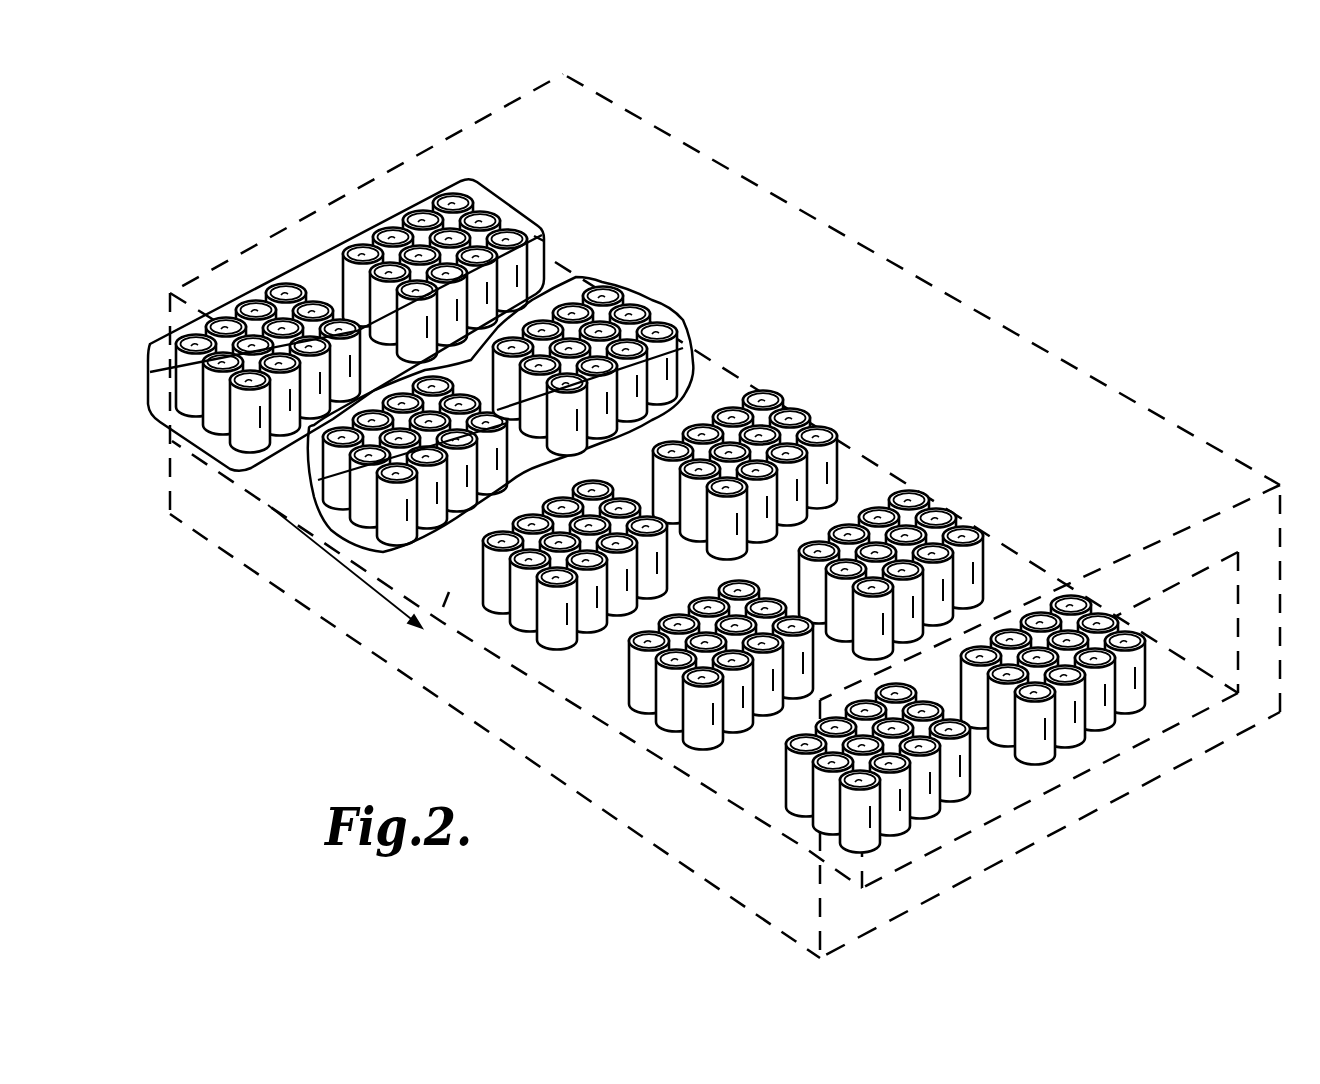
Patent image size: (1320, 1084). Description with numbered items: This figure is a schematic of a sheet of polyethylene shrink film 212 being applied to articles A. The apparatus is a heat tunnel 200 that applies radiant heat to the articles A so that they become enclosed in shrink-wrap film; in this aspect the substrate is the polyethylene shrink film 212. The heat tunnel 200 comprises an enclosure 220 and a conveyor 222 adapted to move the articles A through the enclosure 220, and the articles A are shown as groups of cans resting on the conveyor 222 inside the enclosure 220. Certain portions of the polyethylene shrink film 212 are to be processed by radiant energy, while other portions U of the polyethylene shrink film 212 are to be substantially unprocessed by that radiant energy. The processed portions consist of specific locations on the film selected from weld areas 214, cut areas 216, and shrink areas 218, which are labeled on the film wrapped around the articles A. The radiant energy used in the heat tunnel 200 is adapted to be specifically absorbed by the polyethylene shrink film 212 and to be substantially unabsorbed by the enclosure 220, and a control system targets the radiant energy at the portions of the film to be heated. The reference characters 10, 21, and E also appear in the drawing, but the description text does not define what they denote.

The packaging system 10 is at (897, 243).
The film wrap 21 is at (536, 236).
The heat tunnel 200 is at (945, 223).
The polyethylene shrink film 212 is at (342, 257).
The weld areas 214 is at (318, 446).
The cut areas 216 is at (333, 282).
The shrink areas 218 is at (172, 378).
The enclosure 220 is at (1060, 360).
The conveyor 222 is at (444, 622).
The articles A is at (683, 312).
The article E is at (1002, 727).
The unprocessed portions U is at (300, 290).